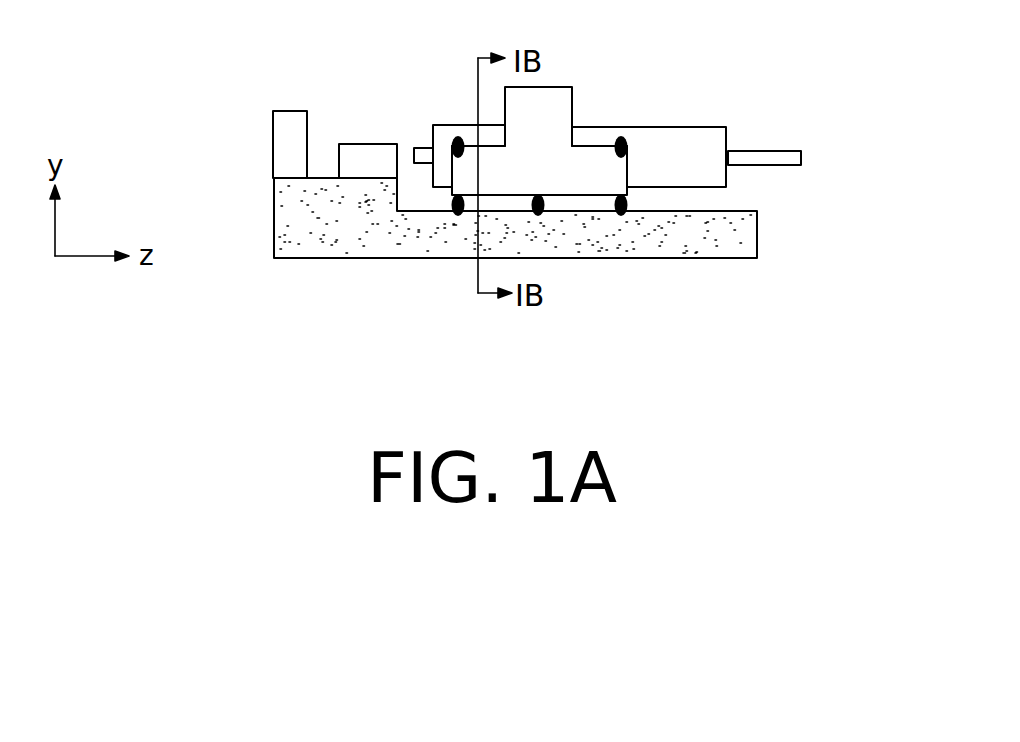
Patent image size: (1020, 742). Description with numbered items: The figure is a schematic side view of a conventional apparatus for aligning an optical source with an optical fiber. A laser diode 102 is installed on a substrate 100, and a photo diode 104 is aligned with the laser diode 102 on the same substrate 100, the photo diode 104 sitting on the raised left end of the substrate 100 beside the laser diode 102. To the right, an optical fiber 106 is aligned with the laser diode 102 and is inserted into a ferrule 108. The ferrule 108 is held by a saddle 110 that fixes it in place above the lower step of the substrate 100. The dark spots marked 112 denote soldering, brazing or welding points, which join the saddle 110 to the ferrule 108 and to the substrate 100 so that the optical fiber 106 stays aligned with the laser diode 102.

The substrate 100 is at (293, 260).
The laser diode 102 is at (368, 143).
The photo diode 104 is at (293, 110).
The optical fiber 106 is at (803, 158).
The ferrule 108 is at (705, 135).
The saddle 110 is at (572, 87).
The soldering, brazing or welding points 112 is at (621, 135).